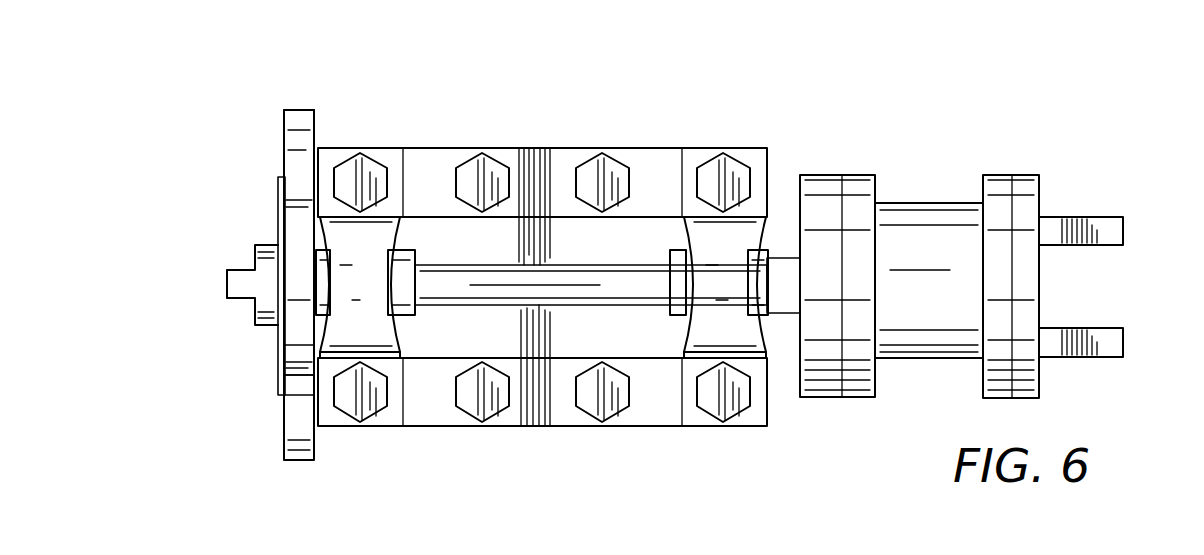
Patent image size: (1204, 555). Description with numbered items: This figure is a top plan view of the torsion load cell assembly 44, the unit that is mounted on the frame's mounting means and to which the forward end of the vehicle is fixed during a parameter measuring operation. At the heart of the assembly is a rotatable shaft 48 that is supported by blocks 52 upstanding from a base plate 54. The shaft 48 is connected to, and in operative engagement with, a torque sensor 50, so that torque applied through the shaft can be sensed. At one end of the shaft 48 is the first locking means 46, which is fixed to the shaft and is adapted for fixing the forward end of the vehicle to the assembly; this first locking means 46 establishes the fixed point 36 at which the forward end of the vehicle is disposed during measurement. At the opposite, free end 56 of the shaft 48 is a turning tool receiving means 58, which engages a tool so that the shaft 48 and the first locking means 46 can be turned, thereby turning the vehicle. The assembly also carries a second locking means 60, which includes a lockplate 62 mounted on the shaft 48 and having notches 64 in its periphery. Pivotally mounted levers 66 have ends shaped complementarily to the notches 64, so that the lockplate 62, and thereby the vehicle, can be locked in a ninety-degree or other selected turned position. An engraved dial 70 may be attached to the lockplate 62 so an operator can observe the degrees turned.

The fixed point 36 is at (1128, 232).
The torsion load cell assembly 44 is at (859, 124).
The first locking means 46 is at (1088, 215).
The rotatable shaft 48 is at (483, 290).
The torque sensor 50 is at (938, 205).
The blocks 52 is at (392, 238).
The base plate 54 is at (437, 157).
The free end 56 is at (245, 268).
The turning tool receiving means 58 is at (245, 300).
The second locking means 60 is at (320, 141).
The lockplate 62 is at (290, 383).
The notches 64 is at (293, 204).
The levers 66 is at (295, 148).
The engraved dial 70 is at (280, 340).